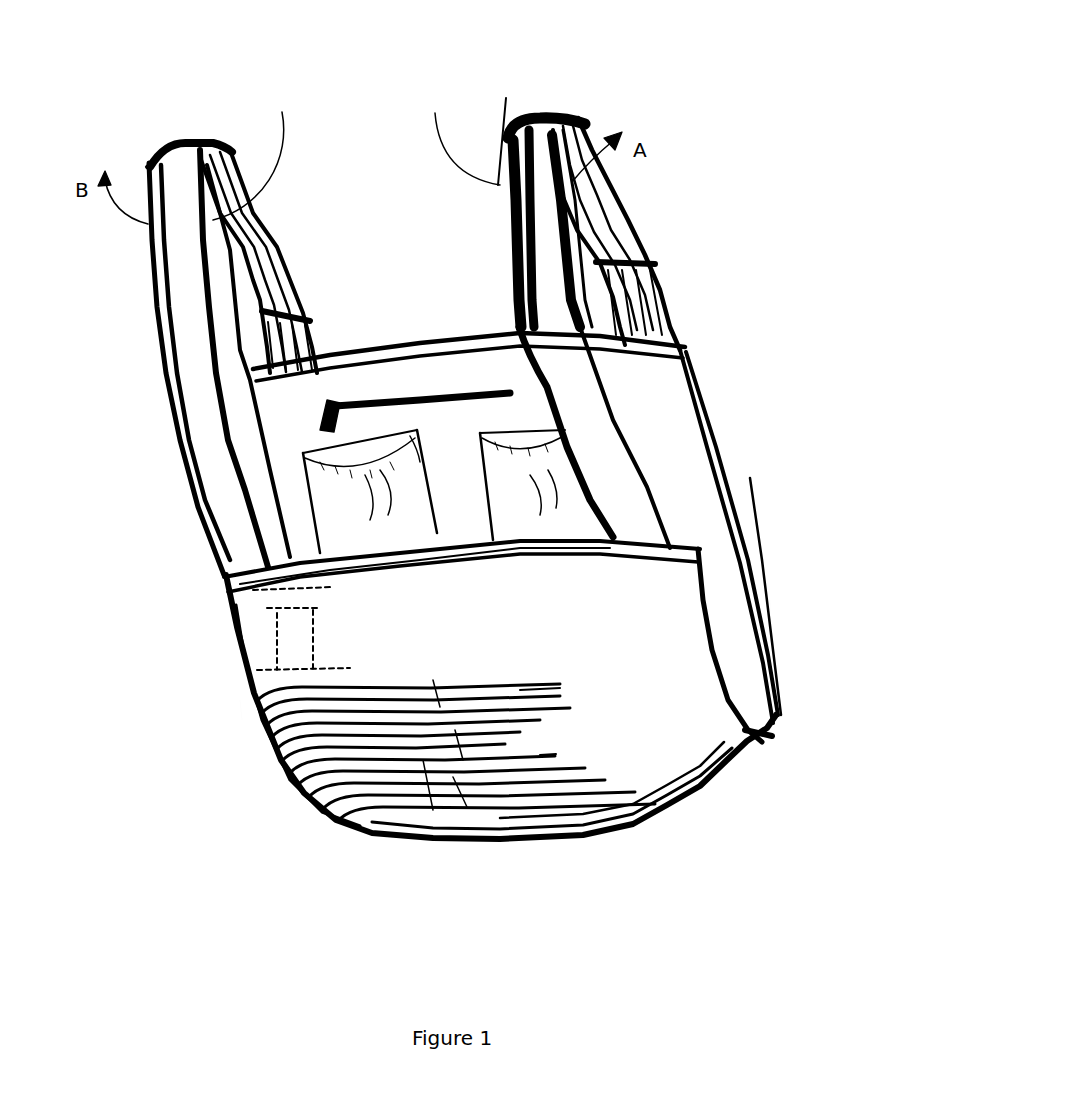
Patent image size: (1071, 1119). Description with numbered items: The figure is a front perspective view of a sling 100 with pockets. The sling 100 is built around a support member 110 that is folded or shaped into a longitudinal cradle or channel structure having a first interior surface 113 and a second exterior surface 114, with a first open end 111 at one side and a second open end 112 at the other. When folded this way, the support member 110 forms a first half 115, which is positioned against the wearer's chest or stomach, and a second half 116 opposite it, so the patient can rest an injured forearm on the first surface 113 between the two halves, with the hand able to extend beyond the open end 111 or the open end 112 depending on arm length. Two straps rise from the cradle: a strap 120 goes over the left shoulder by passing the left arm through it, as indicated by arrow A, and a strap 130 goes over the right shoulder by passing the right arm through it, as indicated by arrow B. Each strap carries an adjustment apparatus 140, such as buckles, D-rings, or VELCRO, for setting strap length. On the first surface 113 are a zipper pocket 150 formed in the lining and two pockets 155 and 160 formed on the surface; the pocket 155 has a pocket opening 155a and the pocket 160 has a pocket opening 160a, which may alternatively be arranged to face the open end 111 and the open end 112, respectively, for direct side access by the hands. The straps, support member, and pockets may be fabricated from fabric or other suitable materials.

The sling 100 is at (752, 93).
The support member 110 is at (770, 588).
The first open end 111 is at (793, 647).
The second open end 112 is at (211, 723).
The first interior surface 113 is at (648, 390).
The second exterior surface 114 is at (633, 757).
The first half 115 is at (367, 372).
The second half 116 is at (307, 598).
The strap 120 is at (550, 113).
The strap 130 is at (213, 143).
The adjustment apparatus 140 is at (293, 292).
The zipper pocket 150 is at (338, 403).
The pocket 155 is at (547, 487).
The pocket opening 155a is at (540, 440).
The pocket 160 is at (350, 507).
The pocket opening 160a is at (350, 455).